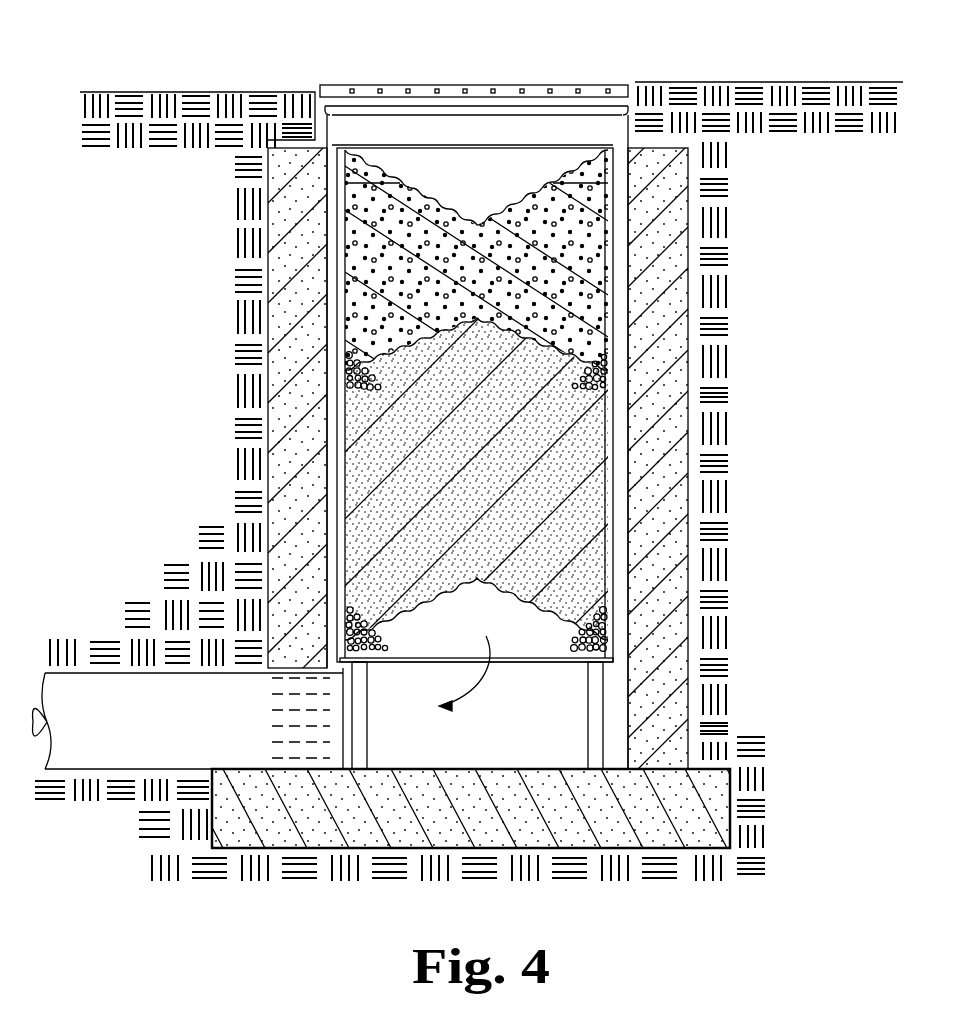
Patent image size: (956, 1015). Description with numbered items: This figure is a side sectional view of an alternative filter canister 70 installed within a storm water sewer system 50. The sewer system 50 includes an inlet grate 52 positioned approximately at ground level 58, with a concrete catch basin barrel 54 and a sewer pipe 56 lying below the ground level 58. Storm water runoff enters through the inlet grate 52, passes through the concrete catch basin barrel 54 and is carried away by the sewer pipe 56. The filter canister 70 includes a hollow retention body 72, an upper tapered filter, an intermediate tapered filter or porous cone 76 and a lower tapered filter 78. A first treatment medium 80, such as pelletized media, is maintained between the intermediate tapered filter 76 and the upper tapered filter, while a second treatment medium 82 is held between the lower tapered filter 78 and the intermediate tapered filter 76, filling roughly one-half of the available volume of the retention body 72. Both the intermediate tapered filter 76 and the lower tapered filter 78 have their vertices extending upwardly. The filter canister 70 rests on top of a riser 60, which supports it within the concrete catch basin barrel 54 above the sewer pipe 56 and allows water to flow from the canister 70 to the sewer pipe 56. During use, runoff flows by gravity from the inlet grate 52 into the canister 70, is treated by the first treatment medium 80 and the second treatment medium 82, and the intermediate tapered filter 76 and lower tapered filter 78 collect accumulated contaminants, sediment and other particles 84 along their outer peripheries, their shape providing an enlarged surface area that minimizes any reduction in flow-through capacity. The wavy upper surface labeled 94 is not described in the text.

The storm water sewer system 50 is at (628, 60).
The inlet grate 52 is at (423, 80).
The concrete catch basin barrel 54 is at (668, 311).
The sewer pipe 56 is at (118, 748).
The ground level 58 is at (158, 92).
The riser 60 is at (608, 723).
The filter canister 70 is at (623, 434).
The hollow retention body 72 is at (340, 404).
The intermediate tapered filter 76 is at (375, 365).
The lower tapered filter 78 is at (568, 612).
The first treatment medium 80 is at (372, 277).
The second treatment medium 82 is at (392, 462).
The accumulated contaminants, sediment and other particles 84 is at (603, 373).
The upper wavy media surface 94 is at (549, 170).